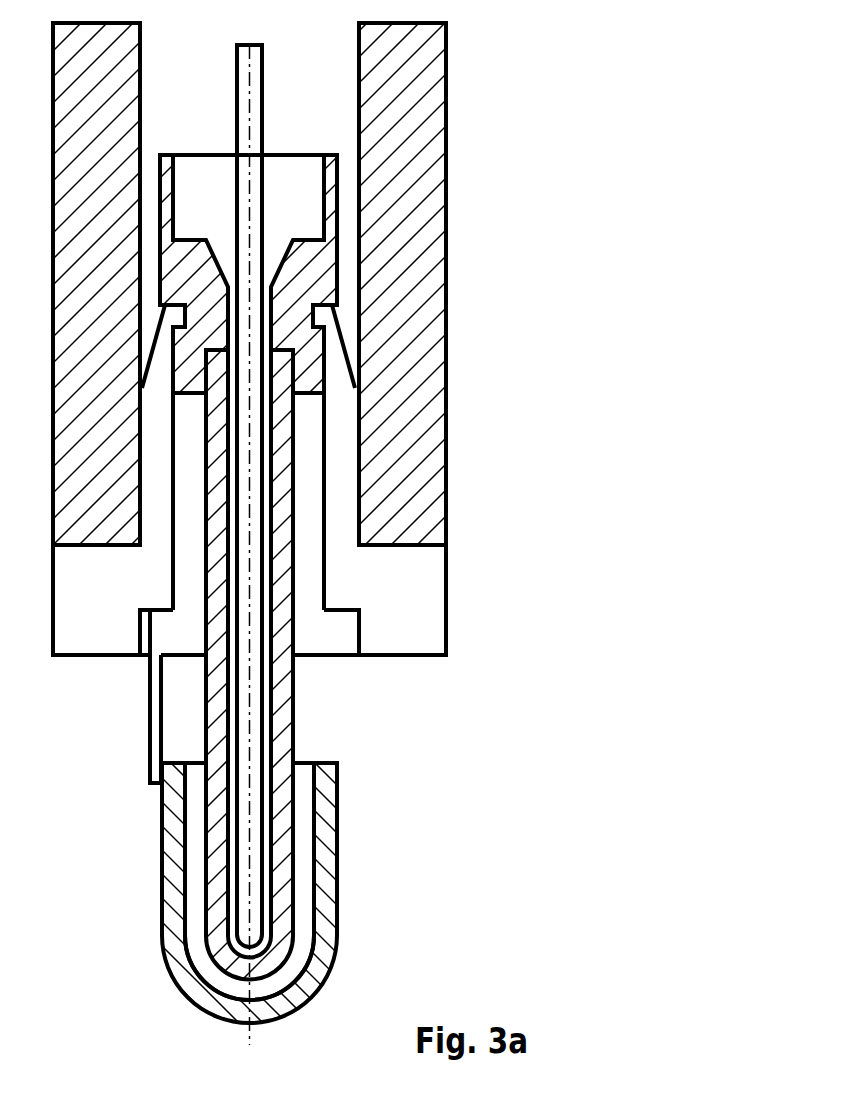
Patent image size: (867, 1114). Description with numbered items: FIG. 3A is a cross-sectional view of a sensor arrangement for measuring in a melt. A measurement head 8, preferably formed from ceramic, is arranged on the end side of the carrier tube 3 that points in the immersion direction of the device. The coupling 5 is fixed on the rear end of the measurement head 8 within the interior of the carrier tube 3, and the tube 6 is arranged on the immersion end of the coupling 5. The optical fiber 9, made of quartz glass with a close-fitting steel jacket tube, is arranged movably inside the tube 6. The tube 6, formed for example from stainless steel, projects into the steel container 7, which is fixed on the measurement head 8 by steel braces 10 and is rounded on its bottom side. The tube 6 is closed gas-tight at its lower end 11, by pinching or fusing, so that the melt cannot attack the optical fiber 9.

The carrier tube 3 is at (422, 133).
The coupling 5 is at (305, 273).
The tube 6 is at (280, 694).
The container 7 is at (328, 903).
The measurement head 8 is at (410, 589).
The optical fiber 9 is at (250, 810).
The steel braces 10 is at (153, 721).
The lower end 11 is at (270, 963).